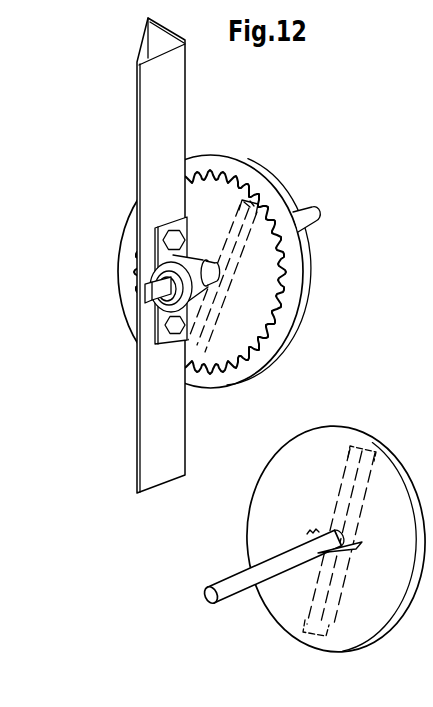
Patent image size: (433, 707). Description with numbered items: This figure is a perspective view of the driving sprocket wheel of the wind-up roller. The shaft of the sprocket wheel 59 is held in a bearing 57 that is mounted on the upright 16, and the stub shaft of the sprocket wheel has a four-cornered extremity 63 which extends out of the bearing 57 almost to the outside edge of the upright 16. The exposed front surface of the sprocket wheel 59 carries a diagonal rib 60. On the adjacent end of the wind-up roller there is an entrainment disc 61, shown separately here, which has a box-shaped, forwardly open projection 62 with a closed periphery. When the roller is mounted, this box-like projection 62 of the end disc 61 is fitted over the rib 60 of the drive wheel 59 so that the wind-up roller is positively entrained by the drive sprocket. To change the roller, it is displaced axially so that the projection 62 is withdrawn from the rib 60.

The upright 16 is at (150, 132).
The bearing 57 is at (158, 257).
The sprocket wheel 59 is at (218, 350).
The diagonal rib 60 is at (257, 200).
The entrainment disc 61 is at (285, 212).
The box-shaped projection 62 is at (372, 446).
The four-cornered extremity 63 is at (145, 300).